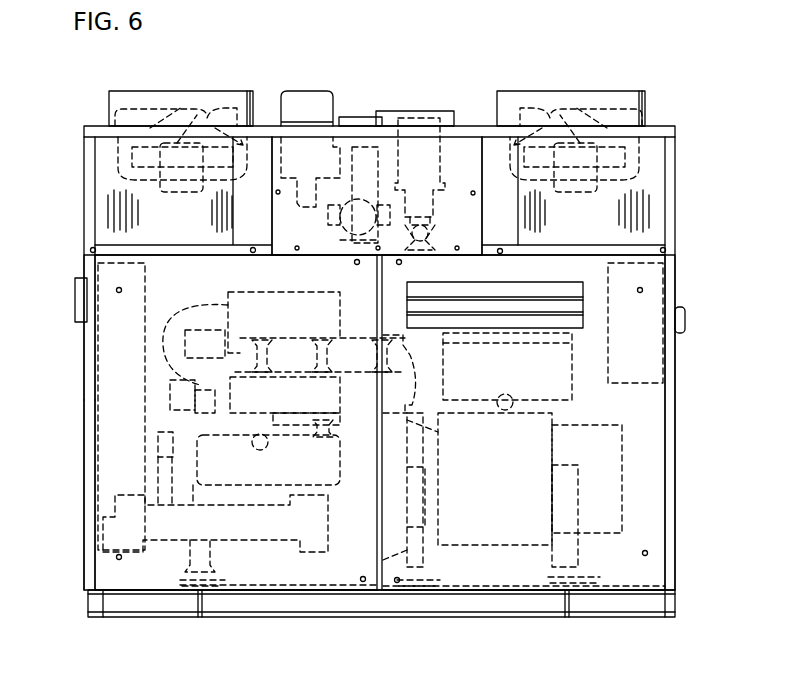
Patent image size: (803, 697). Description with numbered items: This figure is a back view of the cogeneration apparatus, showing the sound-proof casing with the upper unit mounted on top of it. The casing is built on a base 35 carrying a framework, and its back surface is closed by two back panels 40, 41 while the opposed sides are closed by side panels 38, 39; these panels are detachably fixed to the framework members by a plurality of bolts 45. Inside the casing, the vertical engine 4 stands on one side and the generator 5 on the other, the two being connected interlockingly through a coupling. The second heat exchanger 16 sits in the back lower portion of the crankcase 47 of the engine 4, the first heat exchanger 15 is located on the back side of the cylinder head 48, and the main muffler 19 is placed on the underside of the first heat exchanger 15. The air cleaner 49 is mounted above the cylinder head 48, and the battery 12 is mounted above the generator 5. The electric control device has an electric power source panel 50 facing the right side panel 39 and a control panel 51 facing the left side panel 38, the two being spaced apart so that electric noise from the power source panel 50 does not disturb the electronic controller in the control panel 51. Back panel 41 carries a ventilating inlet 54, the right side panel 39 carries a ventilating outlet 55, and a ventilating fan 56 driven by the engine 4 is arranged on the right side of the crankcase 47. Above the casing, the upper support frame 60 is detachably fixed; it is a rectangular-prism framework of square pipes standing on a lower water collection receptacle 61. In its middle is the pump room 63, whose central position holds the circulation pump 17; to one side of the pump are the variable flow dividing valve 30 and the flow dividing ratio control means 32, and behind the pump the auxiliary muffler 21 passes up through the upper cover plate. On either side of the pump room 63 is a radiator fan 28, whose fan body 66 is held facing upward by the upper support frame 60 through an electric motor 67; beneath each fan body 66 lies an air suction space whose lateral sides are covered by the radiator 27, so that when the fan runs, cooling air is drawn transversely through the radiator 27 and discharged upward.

The vertical engine 4 is at (350, 555).
The generator 5 is at (477, 545).
The battery 12 is at (572, 382).
The first heat exchanger 15 is at (413, 372).
The second heat exchanger 16 is at (163, 540).
The circulation pump 17 is at (354, 150).
The main muffler 19 is at (273, 493).
The auxiliary muffler 21 is at (294, 98).
The radiator 27 is at (113, 207).
The radiator fan 28 is at (142, 98).
The variable flow dividing valve 30 is at (495, 293).
The flow dividing ratio control means 32 is at (418, 120).
The base 35 is at (537, 603).
The left side panel 38 is at (672, 433).
The right side panel 39 is at (95, 383).
The back panel 40 is at (95, 463).
The back panel 41 is at (655, 520).
The bolt 45 is at (117, 288).
The crankcase 47 is at (270, 483).
The cylinder head 48 is at (170, 398).
The air cleaner 49 is at (240, 292).
The electric power source panel 50 is at (95, 350).
The control panel 51 is at (665, 375).
The ventilating inlet 54 is at (580, 310).
The ventilating outlet 55 is at (75, 290).
The ventilating fan 56 is at (153, 441).
The upper support frame 60 is at (678, 221).
The lower water collection receptacle 61 is at (670, 250).
The pump room 63 is at (455, 150).
The fan body 66 is at (138, 150).
The electric motor 67 is at (184, 193).